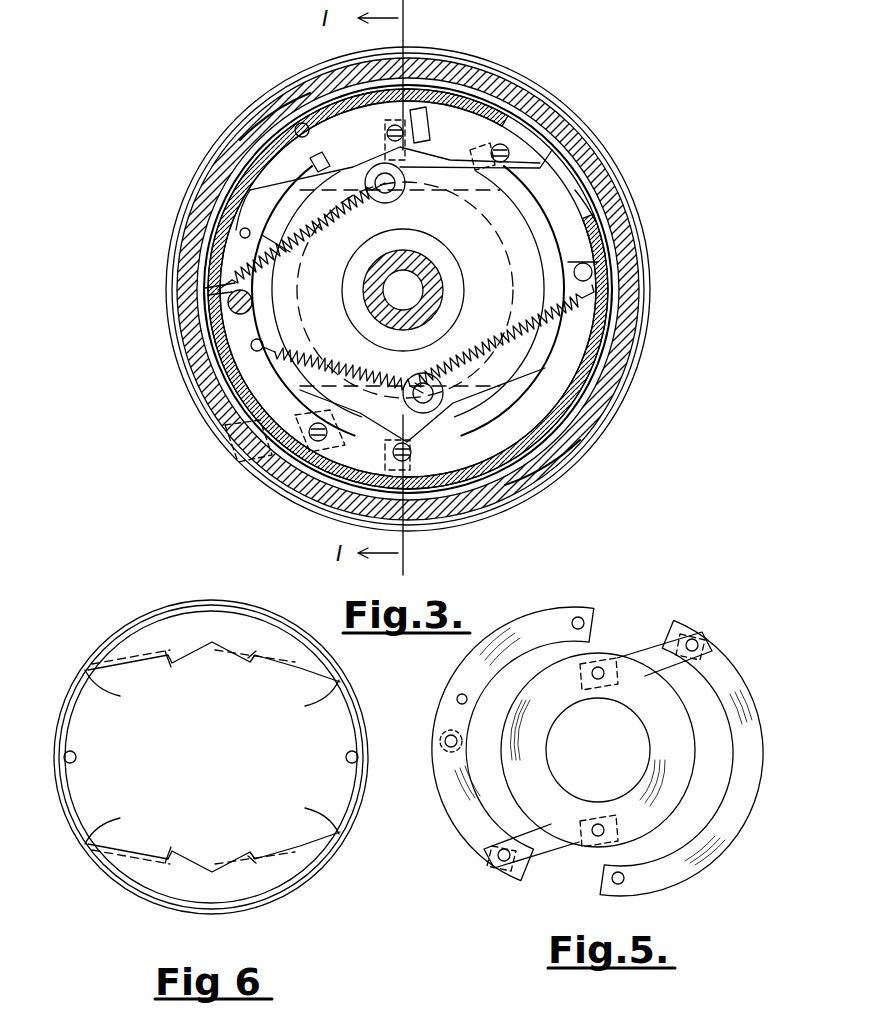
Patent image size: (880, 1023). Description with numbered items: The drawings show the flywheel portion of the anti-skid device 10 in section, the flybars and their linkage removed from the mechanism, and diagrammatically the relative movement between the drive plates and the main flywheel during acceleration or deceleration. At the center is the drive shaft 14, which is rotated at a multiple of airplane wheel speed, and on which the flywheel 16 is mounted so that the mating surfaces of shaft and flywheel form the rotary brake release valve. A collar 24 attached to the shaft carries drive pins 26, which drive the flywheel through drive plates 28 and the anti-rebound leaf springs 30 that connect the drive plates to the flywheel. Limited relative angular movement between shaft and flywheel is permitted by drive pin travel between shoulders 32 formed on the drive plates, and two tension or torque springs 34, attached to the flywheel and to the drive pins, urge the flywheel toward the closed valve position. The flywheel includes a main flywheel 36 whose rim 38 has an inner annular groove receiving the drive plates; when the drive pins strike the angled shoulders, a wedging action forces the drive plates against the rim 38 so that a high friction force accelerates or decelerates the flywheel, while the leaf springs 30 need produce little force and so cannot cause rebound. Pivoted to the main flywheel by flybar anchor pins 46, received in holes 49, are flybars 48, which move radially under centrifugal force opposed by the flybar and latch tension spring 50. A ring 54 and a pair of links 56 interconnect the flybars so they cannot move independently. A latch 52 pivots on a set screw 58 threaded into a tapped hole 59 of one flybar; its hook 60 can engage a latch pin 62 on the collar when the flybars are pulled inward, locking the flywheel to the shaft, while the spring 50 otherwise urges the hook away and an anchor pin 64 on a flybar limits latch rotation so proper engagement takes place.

In FIG. 3, the anti-skid device 10 is at (570, 99).
In FIG. 3, the drive shaft 14 is at (418, 265).
In FIG. 3, the flywheel 16 is at (595, 272).
In FIG. 3, the collar 24 is at (296, 305).
In FIG. 3, the drive pins 26 is at (385, 163).
In FIG. 3, the drive plates 28 is at (466, 72).
In FIG. 6, the drive plates 28 is at (240, 630).
In FIG. 3, the anti-rebound leaf springs 30 is at (237, 190).
In FIG. 6, the anti-rebound leaf springs 30 is at (80, 698).
In FIG. 3, the shoulders 32 is at (300, 120).
In FIG. 6, the shoulders 32 is at (175, 660).
In FIG. 3, the tension or torque springs 34 is at (270, 130).
In FIG. 6, the main flywheel 36 is at (75, 685).
In FIG. 3, the rim 38 is at (600, 218).
In FIG. 6, the rim 38 is at (195, 598).
In FIG. 3, the flybar anchor pins 46 is at (428, 55).
In FIG. 3, the flybars 48 is at (262, 118).
In FIG. 5, the flybars 48 is at (475, 680).
In FIG. 5, the holes 49 is at (578, 617).
In FIG. 3, the flybar and latch tension spring 50 is at (240, 438).
In FIG. 3, the latch 52 is at (255, 375).
In FIG. 5, the ring 54 is at (665, 717).
In FIG. 5, the links 56 is at (650, 650).
In FIG. 3, the set screw 58 is at (238, 310).
In FIG. 5, the tapped hole 59 is at (445, 740).
In FIG. 3, the hook 60 is at (245, 233).
In FIG. 3, the latch pin 62 is at (318, 240).
In FIG. 3, the anchor pin 64 is at (270, 245).
In FIG. 5, the anchor pin 64 is at (457, 698).